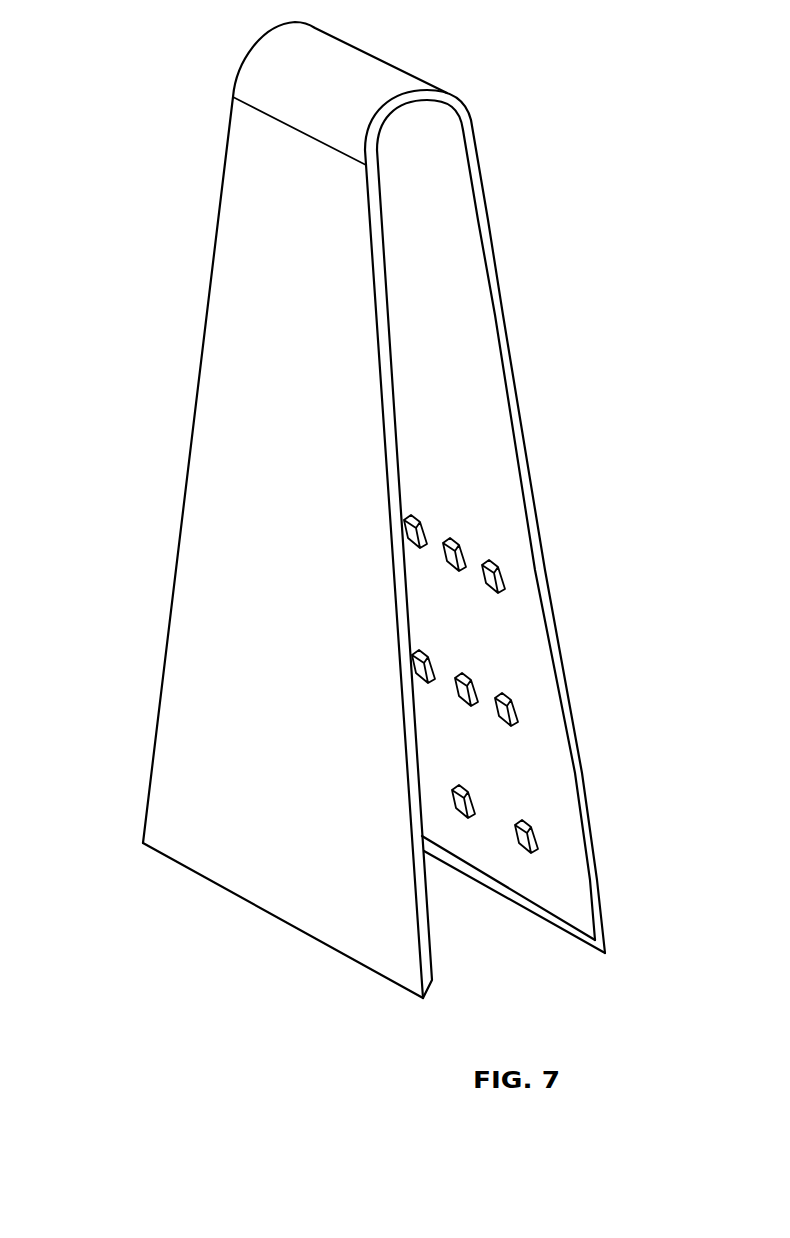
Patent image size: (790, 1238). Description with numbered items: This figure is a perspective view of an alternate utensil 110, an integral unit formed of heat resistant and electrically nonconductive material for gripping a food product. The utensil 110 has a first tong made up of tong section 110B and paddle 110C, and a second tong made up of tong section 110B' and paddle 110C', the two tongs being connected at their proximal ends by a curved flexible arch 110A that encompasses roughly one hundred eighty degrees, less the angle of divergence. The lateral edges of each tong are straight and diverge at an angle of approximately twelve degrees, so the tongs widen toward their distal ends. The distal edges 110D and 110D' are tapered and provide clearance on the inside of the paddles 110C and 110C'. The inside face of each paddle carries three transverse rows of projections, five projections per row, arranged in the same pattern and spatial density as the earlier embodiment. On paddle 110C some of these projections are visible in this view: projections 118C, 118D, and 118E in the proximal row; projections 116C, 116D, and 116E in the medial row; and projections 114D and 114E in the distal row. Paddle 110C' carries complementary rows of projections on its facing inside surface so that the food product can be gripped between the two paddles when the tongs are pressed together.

The utensil 110 is at (183, 471).
The curved flexible arch 110A is at (327, 53).
The tong section 110B is at (554, 536).
The tong section 110B' is at (164, 470).
The paddle 110C is at (581, 535).
The paddle 110C' is at (240, 574).
The distal edge 110D is at (513, 894).
The distal edge 110D' is at (461, 582).
The projection 114D is at (472, 795).
The projection 114E is at (537, 843).
The projection 116C is at (428, 650).
The projection 116D is at (468, 672).
The projection 116E is at (508, 698).
The projection 118C is at (422, 517).
The projection 118D is at (458, 540).
The projection 118E is at (487, 558).